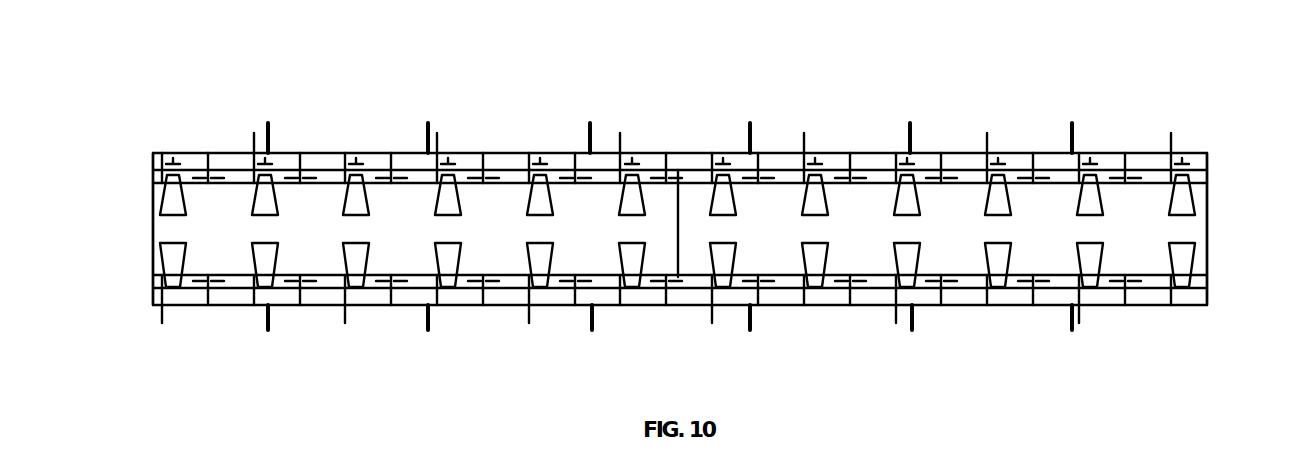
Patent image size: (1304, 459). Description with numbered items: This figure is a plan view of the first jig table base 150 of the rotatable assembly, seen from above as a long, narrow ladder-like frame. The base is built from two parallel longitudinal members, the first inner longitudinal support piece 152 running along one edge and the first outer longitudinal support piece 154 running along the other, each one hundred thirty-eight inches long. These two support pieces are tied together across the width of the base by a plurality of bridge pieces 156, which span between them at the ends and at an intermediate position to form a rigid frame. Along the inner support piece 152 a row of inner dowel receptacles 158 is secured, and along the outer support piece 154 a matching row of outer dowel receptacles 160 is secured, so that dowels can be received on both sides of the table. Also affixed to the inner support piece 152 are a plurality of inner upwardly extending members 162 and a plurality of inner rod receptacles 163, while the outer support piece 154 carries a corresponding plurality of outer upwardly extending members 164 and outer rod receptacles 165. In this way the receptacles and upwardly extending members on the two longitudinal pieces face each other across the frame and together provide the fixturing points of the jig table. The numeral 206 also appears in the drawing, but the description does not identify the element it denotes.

The first jig table base 150 is at (578, 72).
The first inner longitudinal support piece 152 is at (1007, 305).
The first outer longitudinal support piece 154 is at (1108, 153).
The bridge pieces 156 is at (153, 232).
The inner dowel receptacles 158 is at (810, 263).
The outer dowel receptacles 160 is at (815, 195).
The inner upwardly extending members 162 is at (268, 330).
The inner rod receptacles 163 is at (578, 288).
The outer upwardly extending members 164 is at (268, 130).
The outer rod receptacles 165 is at (583, 178).
The vertical strut 206 is at (480, 160).